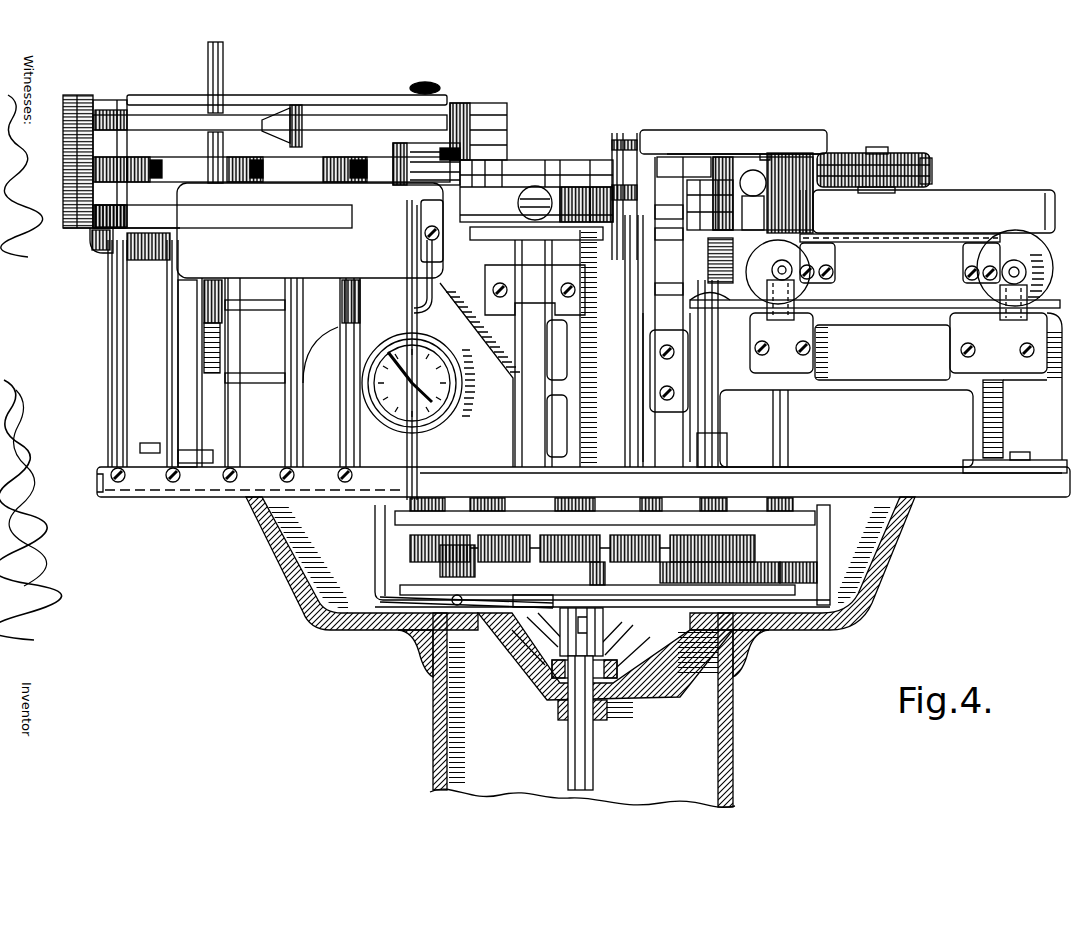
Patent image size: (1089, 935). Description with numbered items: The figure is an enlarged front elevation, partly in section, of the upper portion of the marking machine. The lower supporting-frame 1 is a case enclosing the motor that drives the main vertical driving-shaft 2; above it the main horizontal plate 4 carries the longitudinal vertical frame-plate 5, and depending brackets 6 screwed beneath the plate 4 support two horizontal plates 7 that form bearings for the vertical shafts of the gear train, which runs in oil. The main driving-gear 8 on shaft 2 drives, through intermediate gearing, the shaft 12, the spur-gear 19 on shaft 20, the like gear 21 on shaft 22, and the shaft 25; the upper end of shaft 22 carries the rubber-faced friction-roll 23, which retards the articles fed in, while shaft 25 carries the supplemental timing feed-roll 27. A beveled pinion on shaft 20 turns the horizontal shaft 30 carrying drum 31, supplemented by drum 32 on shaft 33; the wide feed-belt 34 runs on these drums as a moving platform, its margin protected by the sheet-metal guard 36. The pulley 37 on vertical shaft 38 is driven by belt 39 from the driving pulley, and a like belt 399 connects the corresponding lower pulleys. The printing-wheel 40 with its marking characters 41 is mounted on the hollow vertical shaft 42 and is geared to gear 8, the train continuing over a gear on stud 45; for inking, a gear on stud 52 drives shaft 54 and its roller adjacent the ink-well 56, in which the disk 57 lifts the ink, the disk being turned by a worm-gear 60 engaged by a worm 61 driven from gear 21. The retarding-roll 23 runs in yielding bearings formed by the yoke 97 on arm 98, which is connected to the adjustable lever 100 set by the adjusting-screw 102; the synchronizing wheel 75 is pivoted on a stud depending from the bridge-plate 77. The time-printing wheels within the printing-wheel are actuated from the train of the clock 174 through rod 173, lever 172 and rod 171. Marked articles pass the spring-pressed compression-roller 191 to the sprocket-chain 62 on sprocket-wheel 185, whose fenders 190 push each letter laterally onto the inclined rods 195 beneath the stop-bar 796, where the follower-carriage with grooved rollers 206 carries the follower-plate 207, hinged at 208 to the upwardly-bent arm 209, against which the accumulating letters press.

The lower supporting-frame 1 is at (735, 738).
The main vertical driving-shaft 2 is at (593, 765).
The main horizontal plate 4 is at (997, 482).
The longitudinal vertical frame-plate 5 is at (93, 247).
The depending brackets 6 is at (373, 540).
The horizontal plates 7 is at (742, 515).
The main driving-gear 8 is at (582, 560).
The shaft 12 is at (521, 347).
The spur-gear 19 is at (812, 565).
The shaft 20 is at (787, 455).
The gear 21 is at (720, 559).
The shaft 22 is at (717, 413).
The friction-roll 23 is at (706, 178).
The shaft 25 is at (628, 337).
The supplemental timing feed-roll 27 is at (660, 152).
The horizontal shaft 30 is at (810, 298).
The drum 31 is at (762, 310).
The drum 32 is at (1033, 252).
The shaft 33 is at (1027, 272).
The feed-belt 34 is at (875, 296).
The sheet-metal guard 36 is at (988, 197).
The pulley 37 is at (903, 157).
The vertical shaft 38 is at (878, 155).
The belt 39 is at (930, 175).
The printing-wheel 40 is at (523, 163).
The marking characters 41 is at (567, 195).
The vertical shaft 42 is at (527, 407).
The stud 45 is at (475, 562).
The stud 52 is at (597, 595).
The shaft 54 is at (643, 410).
The ink-well 56 is at (690, 268).
The ink-feeding disk 57 is at (585, 535).
The worm-gear 60 is at (688, 290).
The worm 61 is at (758, 323).
The sprocket-chains 62 is at (362, 126).
The synchronizing wheel 75 is at (657, 142).
The bridge-plate 77 is at (625, 140).
The yoke 97 is at (688, 217).
The arm 98 is at (683, 233).
The adjustable lever 100 is at (730, 157).
The adjusting-screw 102 is at (760, 200).
The rod 171 is at (502, 662).
The lever 172 is at (420, 595).
The rod 173 is at (380, 553).
The clock 174 is at (388, 350).
The sprocket-wheel 185 is at (507, 153).
The fenders 190 is at (273, 110).
The compression-roller 191 is at (395, 168).
The inclined rods 195 is at (112, 387).
The grooved rollers 206 is at (355, 300).
The follower-plate 207 is at (310, 230).
The hinge 208 is at (422, 222).
The upwardly-bent arm 209 is at (444, 281).
The bar 399 is at (813, 107).
The plate 796 is at (208, 80).